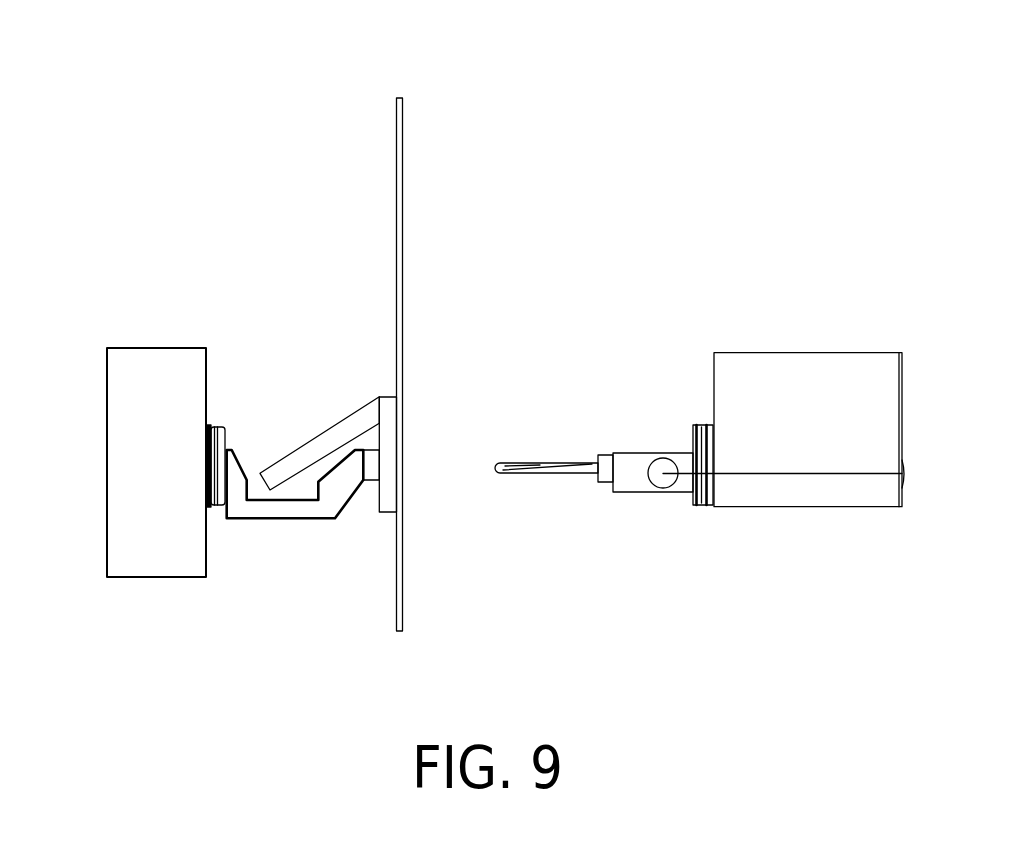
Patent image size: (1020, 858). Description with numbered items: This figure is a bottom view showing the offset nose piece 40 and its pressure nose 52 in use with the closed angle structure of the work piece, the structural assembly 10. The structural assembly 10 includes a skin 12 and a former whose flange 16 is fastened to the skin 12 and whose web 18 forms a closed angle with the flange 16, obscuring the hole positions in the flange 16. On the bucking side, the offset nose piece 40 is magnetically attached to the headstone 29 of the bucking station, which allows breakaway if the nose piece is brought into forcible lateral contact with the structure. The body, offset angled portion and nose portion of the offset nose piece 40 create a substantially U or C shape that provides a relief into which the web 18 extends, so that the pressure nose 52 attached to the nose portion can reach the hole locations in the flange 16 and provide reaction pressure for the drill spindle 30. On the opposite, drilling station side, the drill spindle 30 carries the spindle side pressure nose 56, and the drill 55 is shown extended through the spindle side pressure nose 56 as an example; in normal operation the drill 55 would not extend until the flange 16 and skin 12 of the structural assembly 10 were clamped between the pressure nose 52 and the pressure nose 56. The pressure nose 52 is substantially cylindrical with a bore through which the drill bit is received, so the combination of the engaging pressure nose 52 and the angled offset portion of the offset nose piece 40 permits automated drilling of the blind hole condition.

The structural assembly 10 is at (415, 90).
The skin 12 is at (399, 173).
The flange 16 is at (390, 452).
The web 18 is at (323, 447).
The headstone 29 is at (145, 577).
The drill spindle 30 is at (642, 492).
The offset nose piece 40 is at (287, 518).
The pressure nose 52 is at (372, 470).
The drill 55 is at (520, 473).
The spindle side pressure nose 56 is at (606, 460).